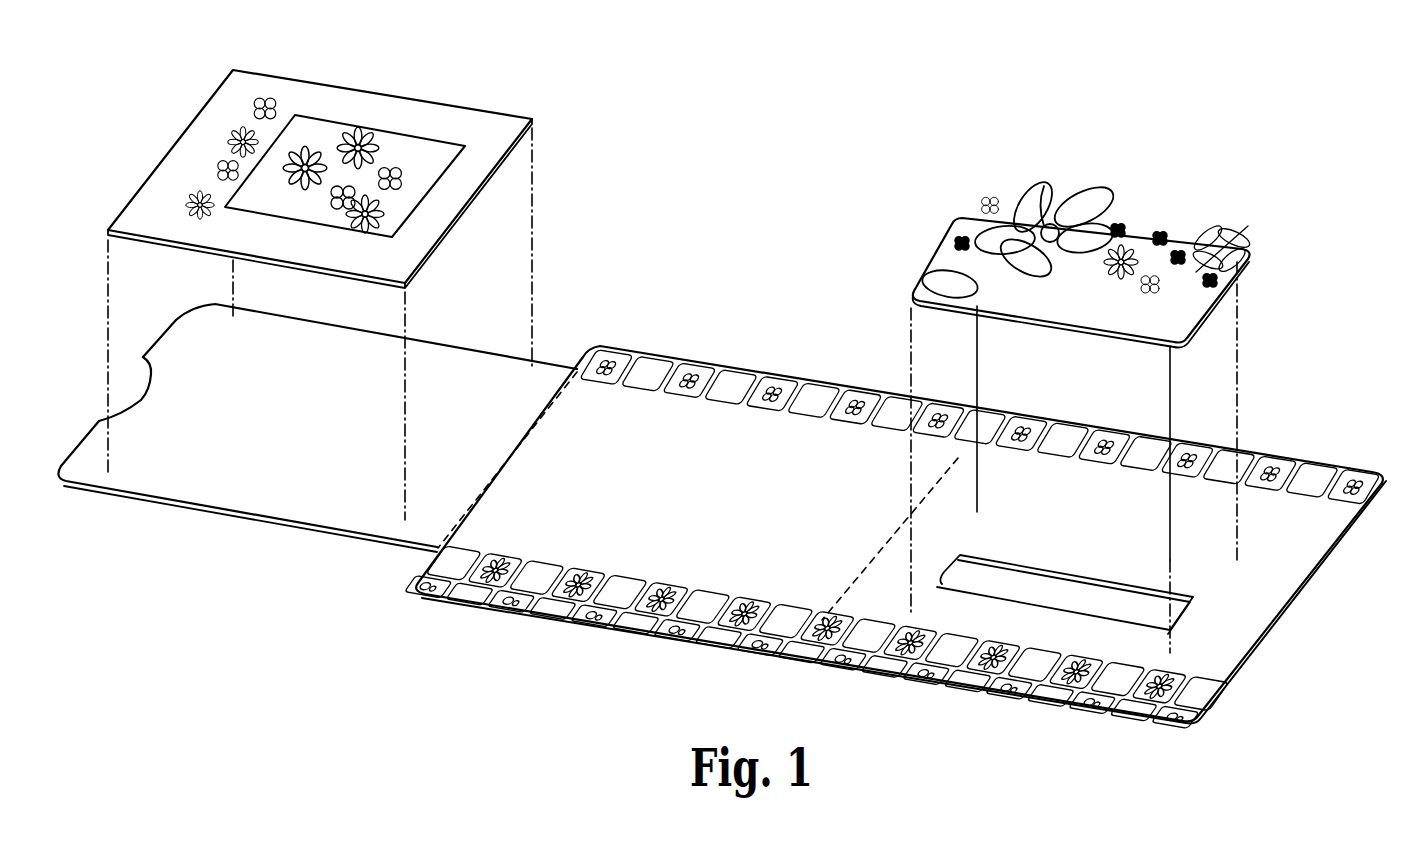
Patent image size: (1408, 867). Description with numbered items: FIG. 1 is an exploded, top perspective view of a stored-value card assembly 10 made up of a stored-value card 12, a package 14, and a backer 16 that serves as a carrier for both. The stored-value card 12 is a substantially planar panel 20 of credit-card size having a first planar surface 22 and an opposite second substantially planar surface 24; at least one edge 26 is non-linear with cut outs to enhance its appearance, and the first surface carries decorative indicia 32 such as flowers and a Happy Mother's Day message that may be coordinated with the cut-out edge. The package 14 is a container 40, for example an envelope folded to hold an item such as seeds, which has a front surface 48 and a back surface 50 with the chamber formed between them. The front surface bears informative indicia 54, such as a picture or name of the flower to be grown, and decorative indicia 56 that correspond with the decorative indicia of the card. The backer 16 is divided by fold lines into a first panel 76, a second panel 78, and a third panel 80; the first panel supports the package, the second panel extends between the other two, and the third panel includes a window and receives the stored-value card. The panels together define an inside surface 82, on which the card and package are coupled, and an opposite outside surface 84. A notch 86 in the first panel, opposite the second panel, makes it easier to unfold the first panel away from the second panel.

The stored-value card assembly 10 is at (1208, 92).
The stored-value card 12 is at (1257, 242).
The package 14 is at (540, 118).
The backer 16 is at (694, 350).
The panel 20 is at (918, 266).
The first planar surface 22 is at (950, 242).
The second substantially planar surface 24 is at (953, 304).
The edge 26 is at (1100, 185).
The decorative indicia 32 is at (1102, 203).
The container 40 is at (485, 150).
The front surface 48 is at (381, 112).
The back surface 50 is at (346, 277).
The informative indicia 54 is at (240, 112).
The decorative indicia 56 is at (212, 222).
The first panel 76 is at (282, 496).
The second panel 78 is at (620, 550).
The third panel 80 is at (1060, 632).
The inside surface 82 is at (1272, 590).
The outside surface 84 is at (1248, 664).
The notch 86 is at (145, 395).